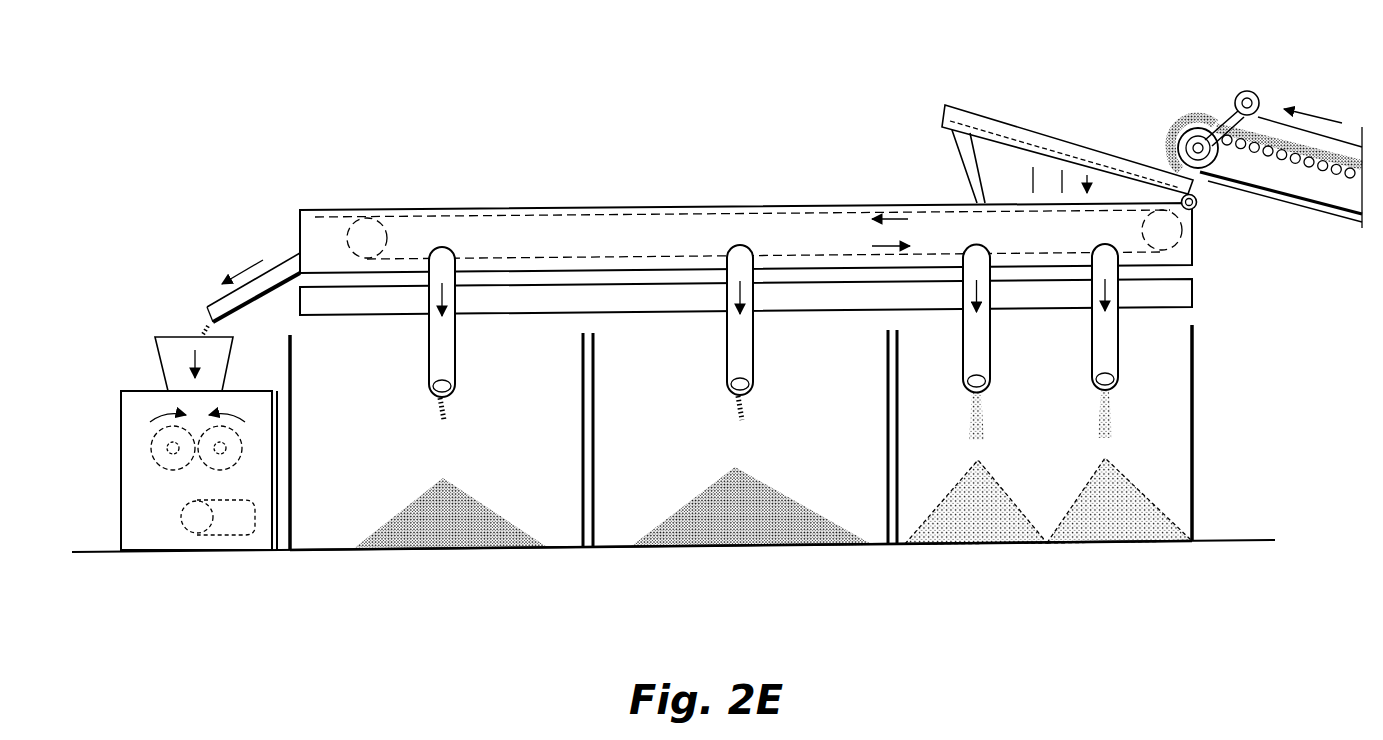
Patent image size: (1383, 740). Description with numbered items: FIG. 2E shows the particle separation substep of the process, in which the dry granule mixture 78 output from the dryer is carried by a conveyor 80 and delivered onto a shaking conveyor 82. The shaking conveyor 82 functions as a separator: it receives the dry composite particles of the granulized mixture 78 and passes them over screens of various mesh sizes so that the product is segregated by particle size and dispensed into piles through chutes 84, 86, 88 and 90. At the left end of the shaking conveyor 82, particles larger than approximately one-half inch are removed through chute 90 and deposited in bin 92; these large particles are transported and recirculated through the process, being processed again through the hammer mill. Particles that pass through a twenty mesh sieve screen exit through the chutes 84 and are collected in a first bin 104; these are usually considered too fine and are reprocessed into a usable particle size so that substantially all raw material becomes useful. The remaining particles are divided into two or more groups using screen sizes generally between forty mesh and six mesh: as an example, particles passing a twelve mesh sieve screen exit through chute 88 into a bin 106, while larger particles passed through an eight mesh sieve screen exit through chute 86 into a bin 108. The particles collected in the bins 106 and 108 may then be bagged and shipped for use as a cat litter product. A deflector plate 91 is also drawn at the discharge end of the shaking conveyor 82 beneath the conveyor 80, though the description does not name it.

The dry granule mixture 78 is at (1168, 148).
The conveyor 80 is at (1315, 200).
The shaking conveyor 82 is at (638, 207).
The chutes 84 is at (980, 350).
The chute 86 is at (740, 347).
The chute 88 is at (447, 357).
The chute 90 is at (280, 268).
The deflector plate 91 is at (945, 105).
The bin 92 is at (120, 428).
The first bin 104 is at (1147, 458).
The bin 106 is at (342, 480).
The bin 108 is at (627, 495).